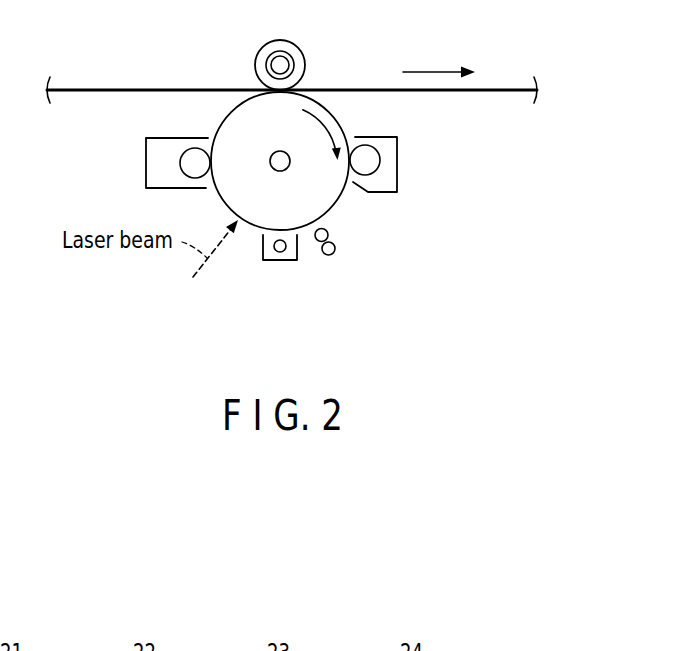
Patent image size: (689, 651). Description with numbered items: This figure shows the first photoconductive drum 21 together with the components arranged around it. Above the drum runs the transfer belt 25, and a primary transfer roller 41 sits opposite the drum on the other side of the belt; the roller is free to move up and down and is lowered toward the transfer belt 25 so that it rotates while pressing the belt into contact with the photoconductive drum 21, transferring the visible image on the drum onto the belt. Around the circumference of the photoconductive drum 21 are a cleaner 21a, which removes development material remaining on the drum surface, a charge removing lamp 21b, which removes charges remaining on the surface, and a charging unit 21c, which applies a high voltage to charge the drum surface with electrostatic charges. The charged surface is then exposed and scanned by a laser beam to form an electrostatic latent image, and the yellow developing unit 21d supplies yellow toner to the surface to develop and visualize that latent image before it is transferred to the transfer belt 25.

The transfer belt 25 is at (173, 89).
The primary transfer roller 41 is at (298, 45).
The photoconductive drum 21 is at (332, 205).
The cleaner 21a is at (397, 150).
The charge removing lamp 21b is at (334, 254).
The charging unit 21c is at (285, 262).
The yellow developing unit 21d is at (146, 158).